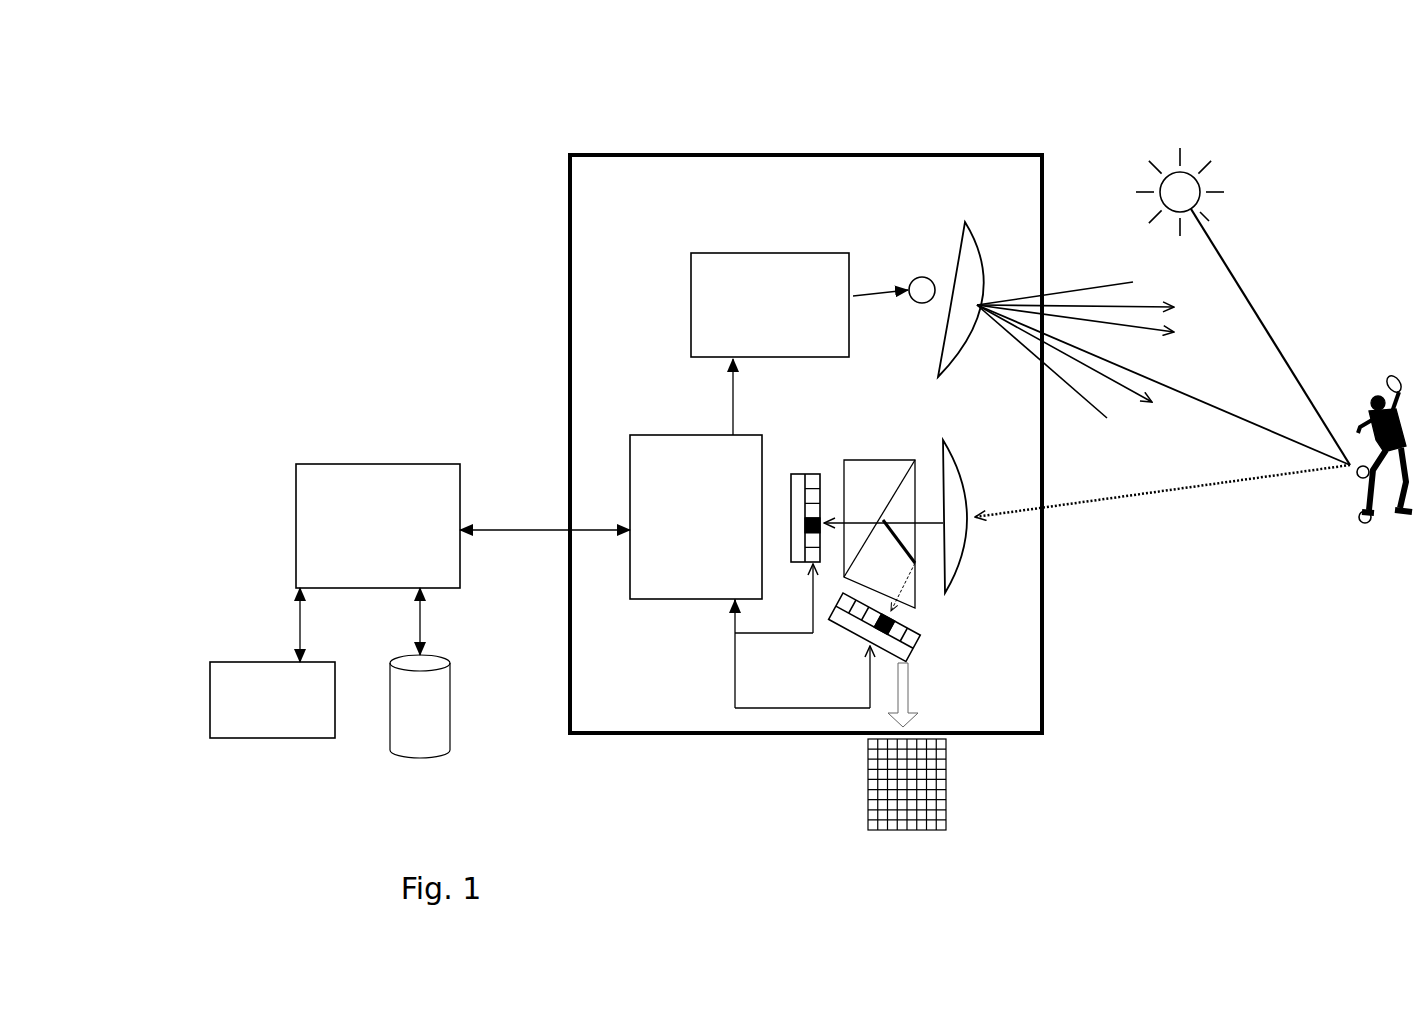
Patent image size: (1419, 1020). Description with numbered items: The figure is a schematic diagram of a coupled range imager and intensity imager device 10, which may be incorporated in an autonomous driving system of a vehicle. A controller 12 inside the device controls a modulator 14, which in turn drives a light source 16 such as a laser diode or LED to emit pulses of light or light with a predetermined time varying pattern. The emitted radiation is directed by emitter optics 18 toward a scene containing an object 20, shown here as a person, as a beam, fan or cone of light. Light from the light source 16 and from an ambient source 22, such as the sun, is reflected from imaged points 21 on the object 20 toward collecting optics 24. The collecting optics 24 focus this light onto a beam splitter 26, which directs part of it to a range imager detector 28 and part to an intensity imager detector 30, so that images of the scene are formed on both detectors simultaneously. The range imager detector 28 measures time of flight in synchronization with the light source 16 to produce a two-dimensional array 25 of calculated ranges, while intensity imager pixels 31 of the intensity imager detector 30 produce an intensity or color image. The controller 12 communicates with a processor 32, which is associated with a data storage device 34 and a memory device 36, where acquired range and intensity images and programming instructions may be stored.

The coupled range imager and intensity imager device 10 is at (524, 176).
The controller 12 is at (682, 435).
The modulator 14 is at (723, 253).
The light source 16 is at (920, 274).
The emitter optics 18 is at (966, 222).
The object 20 is at (1375, 393).
The imaged points 21 is at (1358, 475).
The ambient source 22 is at (1200, 180).
The collecting optics 24 is at (963, 467).
The two-dimensional array 25 is at (948, 770).
The beam splitter 26 is at (888, 460).
The range imager detector 28 is at (901, 644).
The intensity imager detector 30 is at (824, 481).
The intensity imager pixels 31 is at (821, 493).
The processor 32 is at (380, 463).
The data storage device 34 is at (452, 712).
The memory device 36 is at (222, 657).